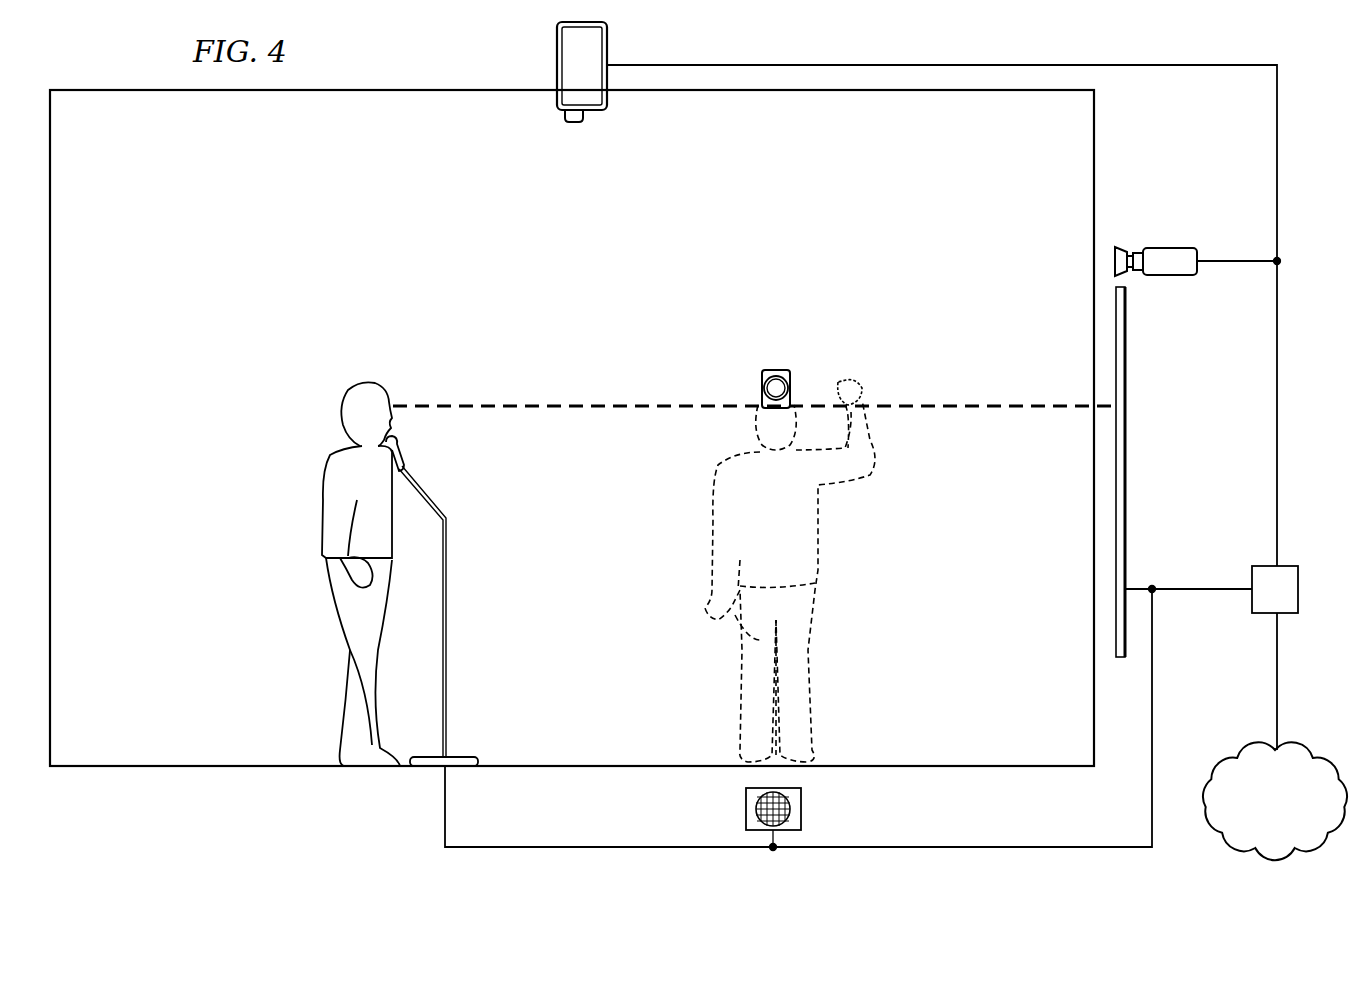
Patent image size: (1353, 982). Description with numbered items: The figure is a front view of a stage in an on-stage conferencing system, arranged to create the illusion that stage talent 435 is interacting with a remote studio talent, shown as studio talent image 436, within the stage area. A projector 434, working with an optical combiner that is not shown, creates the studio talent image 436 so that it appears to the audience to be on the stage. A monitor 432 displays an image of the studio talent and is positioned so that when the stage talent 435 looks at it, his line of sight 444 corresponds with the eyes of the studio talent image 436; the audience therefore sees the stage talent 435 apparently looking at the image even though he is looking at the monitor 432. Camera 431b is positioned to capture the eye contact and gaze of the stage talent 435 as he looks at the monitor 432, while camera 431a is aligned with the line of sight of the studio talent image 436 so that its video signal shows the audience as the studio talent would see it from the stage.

The projector 434 is at (557, 47).
The camera 431a is at (778, 368).
The camera 431b is at (1170, 248).
The monitor 432 is at (1126, 399).
The stage talent 435 is at (357, 385).
The studio talent image 436 is at (820, 528).
The line of sight 444 is at (533, 403).